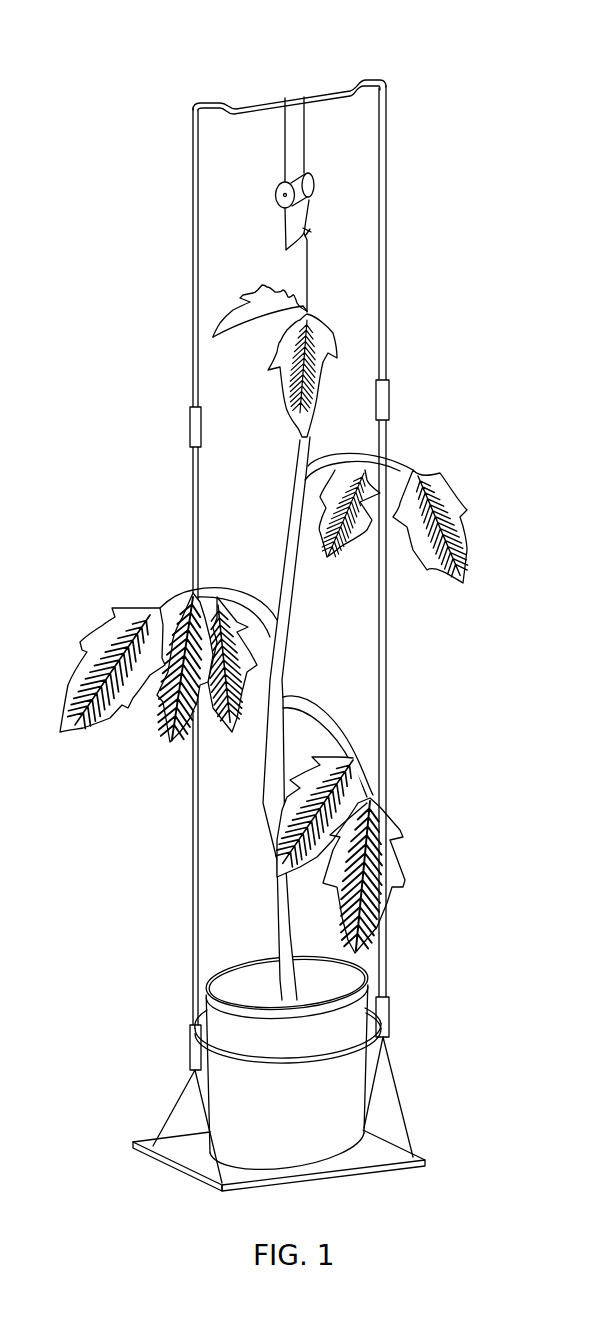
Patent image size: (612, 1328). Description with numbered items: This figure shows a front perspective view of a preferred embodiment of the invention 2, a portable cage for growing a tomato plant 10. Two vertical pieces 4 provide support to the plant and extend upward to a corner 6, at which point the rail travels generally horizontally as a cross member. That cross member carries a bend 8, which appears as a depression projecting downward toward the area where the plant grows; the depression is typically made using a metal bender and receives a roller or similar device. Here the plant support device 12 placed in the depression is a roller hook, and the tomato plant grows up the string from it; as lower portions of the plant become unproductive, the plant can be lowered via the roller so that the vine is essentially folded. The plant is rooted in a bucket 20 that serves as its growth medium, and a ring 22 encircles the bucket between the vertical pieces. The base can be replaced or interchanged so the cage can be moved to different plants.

The embodiment of the invention 2 is at (325, 604).
The vertical pieces 4 is at (386, 743).
The corner 6 is at (388, 80).
The bend 8 is at (267, 101).
The tomato plant 10 is at (393, 880).
The plant support device 12 is at (305, 164).
The bucket 20 is at (353, 1171).
The pot ring 22 is at (350, 1017).